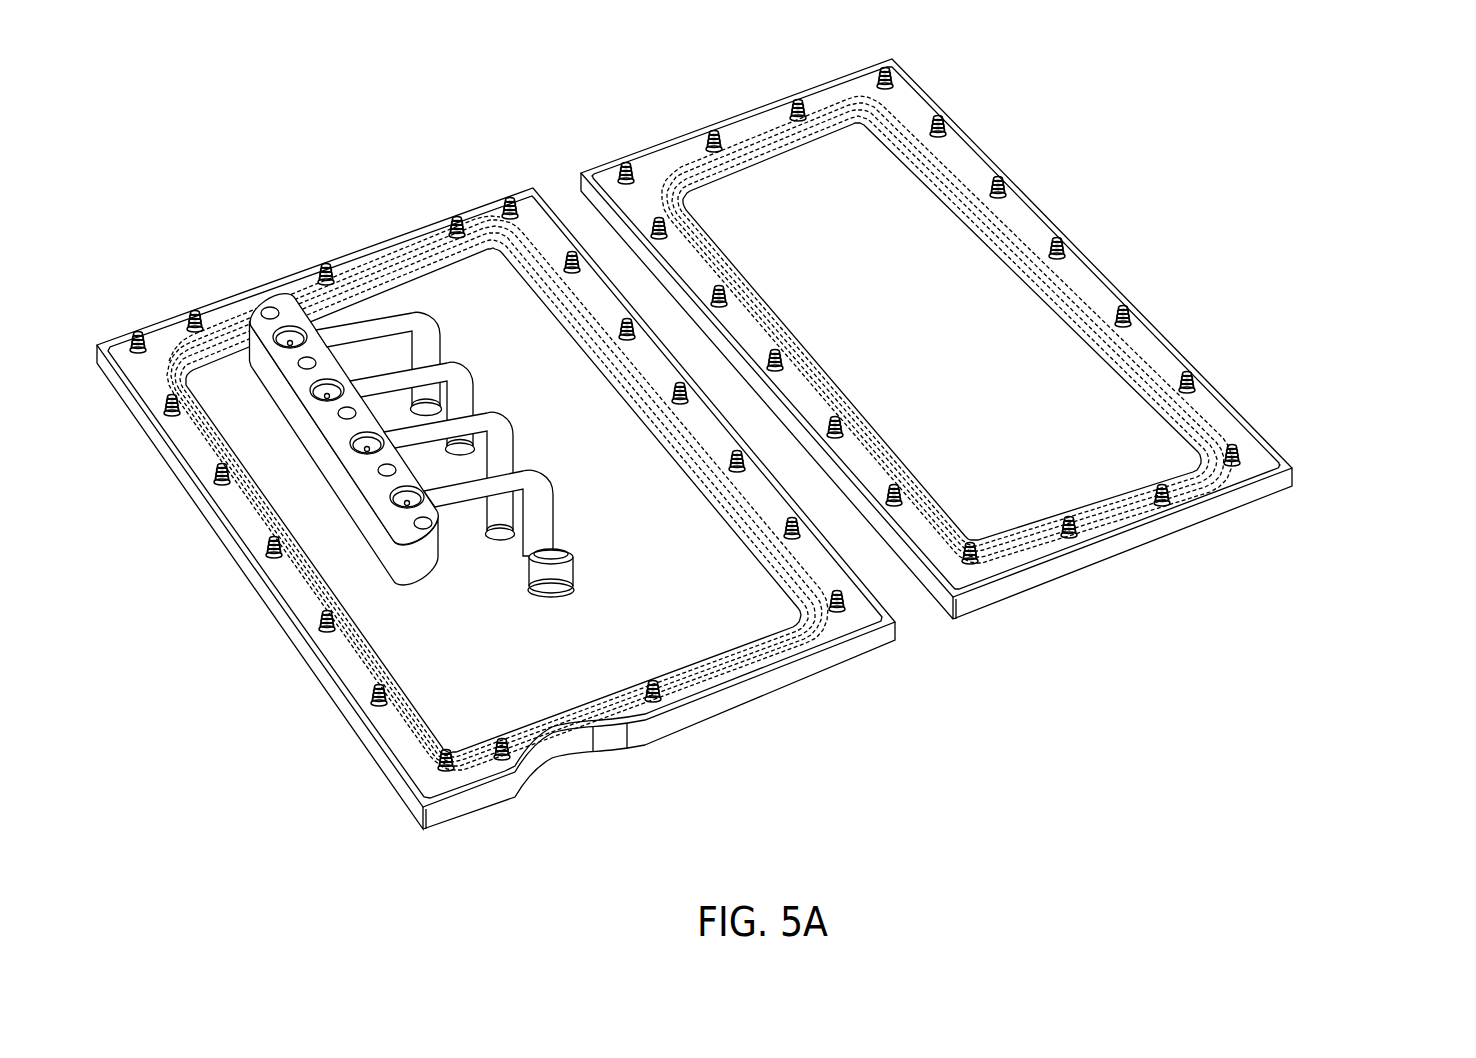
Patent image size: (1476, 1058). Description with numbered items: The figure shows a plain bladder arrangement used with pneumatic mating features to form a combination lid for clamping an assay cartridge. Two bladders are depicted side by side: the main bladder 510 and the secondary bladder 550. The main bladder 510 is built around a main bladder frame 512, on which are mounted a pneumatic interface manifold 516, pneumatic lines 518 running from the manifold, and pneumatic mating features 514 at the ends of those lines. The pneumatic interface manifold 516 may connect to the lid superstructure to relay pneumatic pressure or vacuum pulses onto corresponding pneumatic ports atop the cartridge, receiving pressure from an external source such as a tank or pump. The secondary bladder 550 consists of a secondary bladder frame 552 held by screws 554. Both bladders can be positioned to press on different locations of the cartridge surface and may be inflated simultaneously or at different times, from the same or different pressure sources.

The main bladder 510 is at (742, 600).
The main bladder frame 512 is at (378, 777).
The pneumatic mating features 514 is at (547, 603).
The pneumatic interface manifold 516 is at (322, 433).
The pneumatic lines 518 is at (371, 326).
The secondary bladder 550 is at (1028, 492).
The secondary bladder frame 552 is at (1309, 470).
The screws 554 is at (1219, 365).